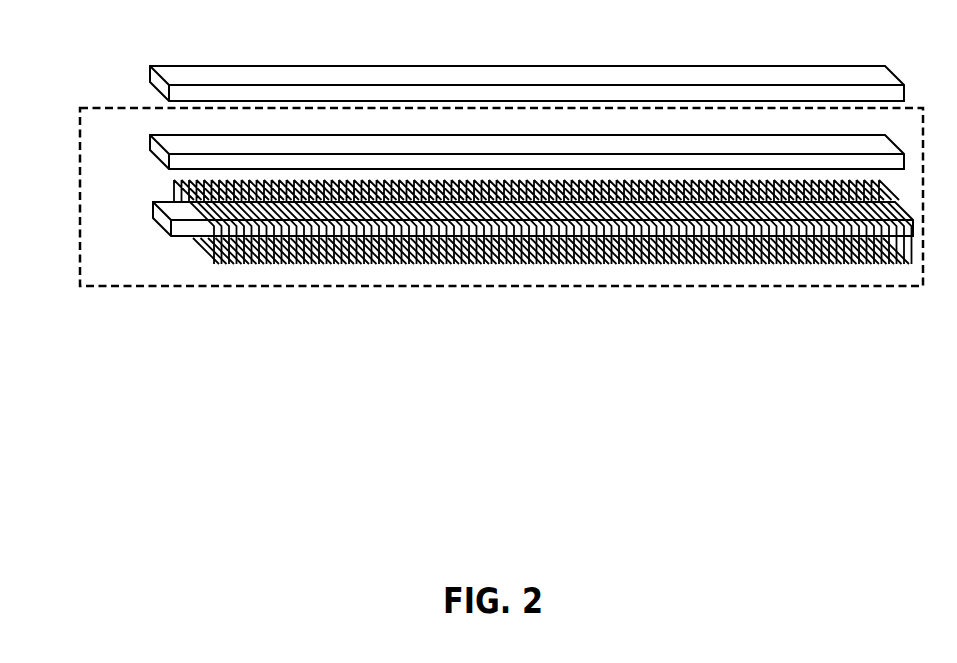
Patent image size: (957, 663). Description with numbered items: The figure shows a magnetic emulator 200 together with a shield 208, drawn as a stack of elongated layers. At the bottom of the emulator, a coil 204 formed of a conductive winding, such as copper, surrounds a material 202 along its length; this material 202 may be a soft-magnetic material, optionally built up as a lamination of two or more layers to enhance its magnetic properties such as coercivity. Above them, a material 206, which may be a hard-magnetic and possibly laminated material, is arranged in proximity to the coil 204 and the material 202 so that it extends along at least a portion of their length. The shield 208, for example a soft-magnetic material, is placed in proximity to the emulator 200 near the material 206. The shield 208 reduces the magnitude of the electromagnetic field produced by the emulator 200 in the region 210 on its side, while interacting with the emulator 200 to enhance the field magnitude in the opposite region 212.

The magnetic emulator 200 is at (97, 107).
The material 202 is at (152, 217).
The coil 204 is at (206, 249).
The material 206 is at (173, 133).
The shield 208 is at (173, 64).
The region 210 is at (535, 38).
The region 212 is at (540, 324).